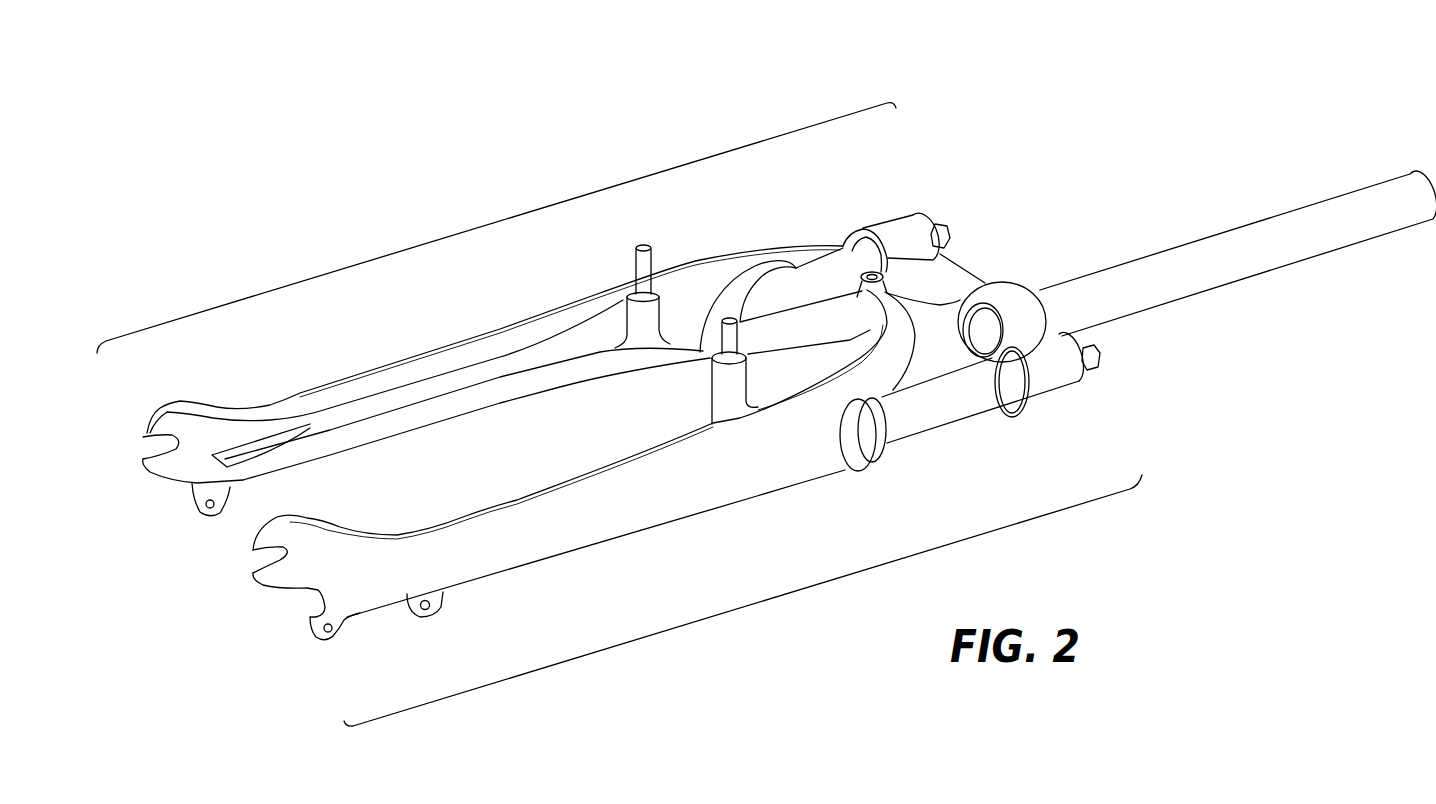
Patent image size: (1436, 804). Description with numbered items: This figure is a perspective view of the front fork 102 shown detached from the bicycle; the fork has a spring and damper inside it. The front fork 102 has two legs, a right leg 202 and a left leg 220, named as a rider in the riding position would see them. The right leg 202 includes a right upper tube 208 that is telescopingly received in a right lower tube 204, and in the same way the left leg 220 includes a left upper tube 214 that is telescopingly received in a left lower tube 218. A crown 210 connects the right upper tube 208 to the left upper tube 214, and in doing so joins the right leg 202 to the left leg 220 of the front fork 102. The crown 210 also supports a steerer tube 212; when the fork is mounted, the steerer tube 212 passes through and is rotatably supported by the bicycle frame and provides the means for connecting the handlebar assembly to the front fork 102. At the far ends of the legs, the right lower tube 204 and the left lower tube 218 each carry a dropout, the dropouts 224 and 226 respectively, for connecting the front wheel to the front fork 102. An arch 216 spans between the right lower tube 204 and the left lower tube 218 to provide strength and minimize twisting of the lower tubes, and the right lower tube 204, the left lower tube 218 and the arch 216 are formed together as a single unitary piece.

The front fork 102 is at (247, 155).
The right leg 202 is at (492, 216).
The right lower tube 204 is at (379, 367).
The right upper tube 208 is at (830, 243).
The crown 210 is at (983, 280).
The steerer tube 212 is at (1313, 200).
The left upper tube 214 is at (975, 408).
The arch 216 is at (890, 362).
The left lower tube 218 is at (563, 555).
The left leg 220 is at (744, 610).
The dropout 224 is at (152, 413).
The dropout 226 is at (260, 526).